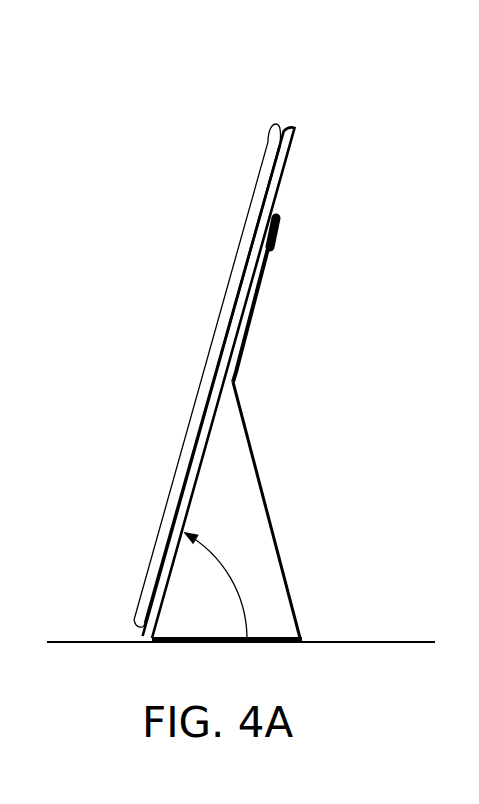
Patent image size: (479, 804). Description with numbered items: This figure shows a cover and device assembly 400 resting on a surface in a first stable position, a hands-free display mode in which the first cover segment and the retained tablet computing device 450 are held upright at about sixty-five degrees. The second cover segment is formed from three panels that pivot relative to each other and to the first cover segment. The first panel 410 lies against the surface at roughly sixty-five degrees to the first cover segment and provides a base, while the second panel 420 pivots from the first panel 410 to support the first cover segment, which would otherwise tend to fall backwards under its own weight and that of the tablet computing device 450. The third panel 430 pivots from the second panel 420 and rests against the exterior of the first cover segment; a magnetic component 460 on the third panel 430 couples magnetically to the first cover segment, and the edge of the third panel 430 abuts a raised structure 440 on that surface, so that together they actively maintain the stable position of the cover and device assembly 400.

The cover and device assembly 400 is at (328, 111).
The first panel 410 is at (287, 624).
The second panel 420 is at (288, 488).
The third panel 430 is at (280, 328).
The raised structure 440 is at (297, 233).
The tablet computing device 450 is at (191, 356).
The magnetic component 460 is at (284, 268).